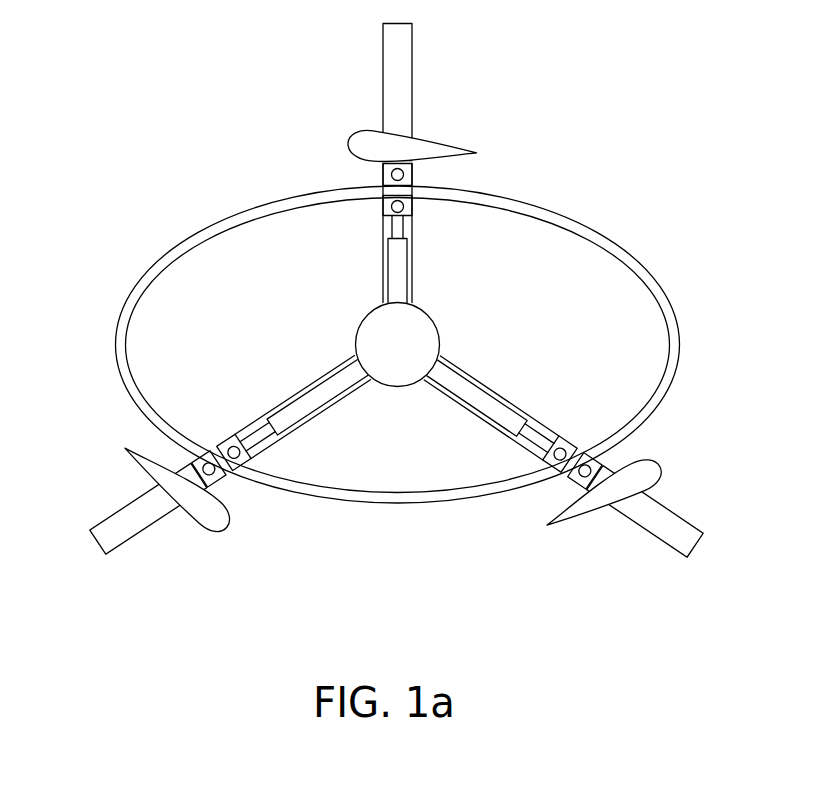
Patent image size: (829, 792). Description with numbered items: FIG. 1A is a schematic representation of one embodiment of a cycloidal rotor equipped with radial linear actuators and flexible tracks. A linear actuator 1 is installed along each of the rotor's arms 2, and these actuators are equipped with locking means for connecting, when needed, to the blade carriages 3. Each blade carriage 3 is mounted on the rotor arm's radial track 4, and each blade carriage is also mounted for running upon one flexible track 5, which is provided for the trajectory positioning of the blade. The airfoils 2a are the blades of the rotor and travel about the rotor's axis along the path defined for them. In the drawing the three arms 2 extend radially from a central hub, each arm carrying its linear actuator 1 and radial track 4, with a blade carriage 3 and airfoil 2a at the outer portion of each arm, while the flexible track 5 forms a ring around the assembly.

The linear actuator 1 is at (385, 287).
The rotor arm 2 is at (398, 72).
The airfoil 2a is at (443, 153).
The blade carriage 3 is at (222, 485).
The radial track 4 is at (670, 535).
The flexible track 5 is at (148, 267).